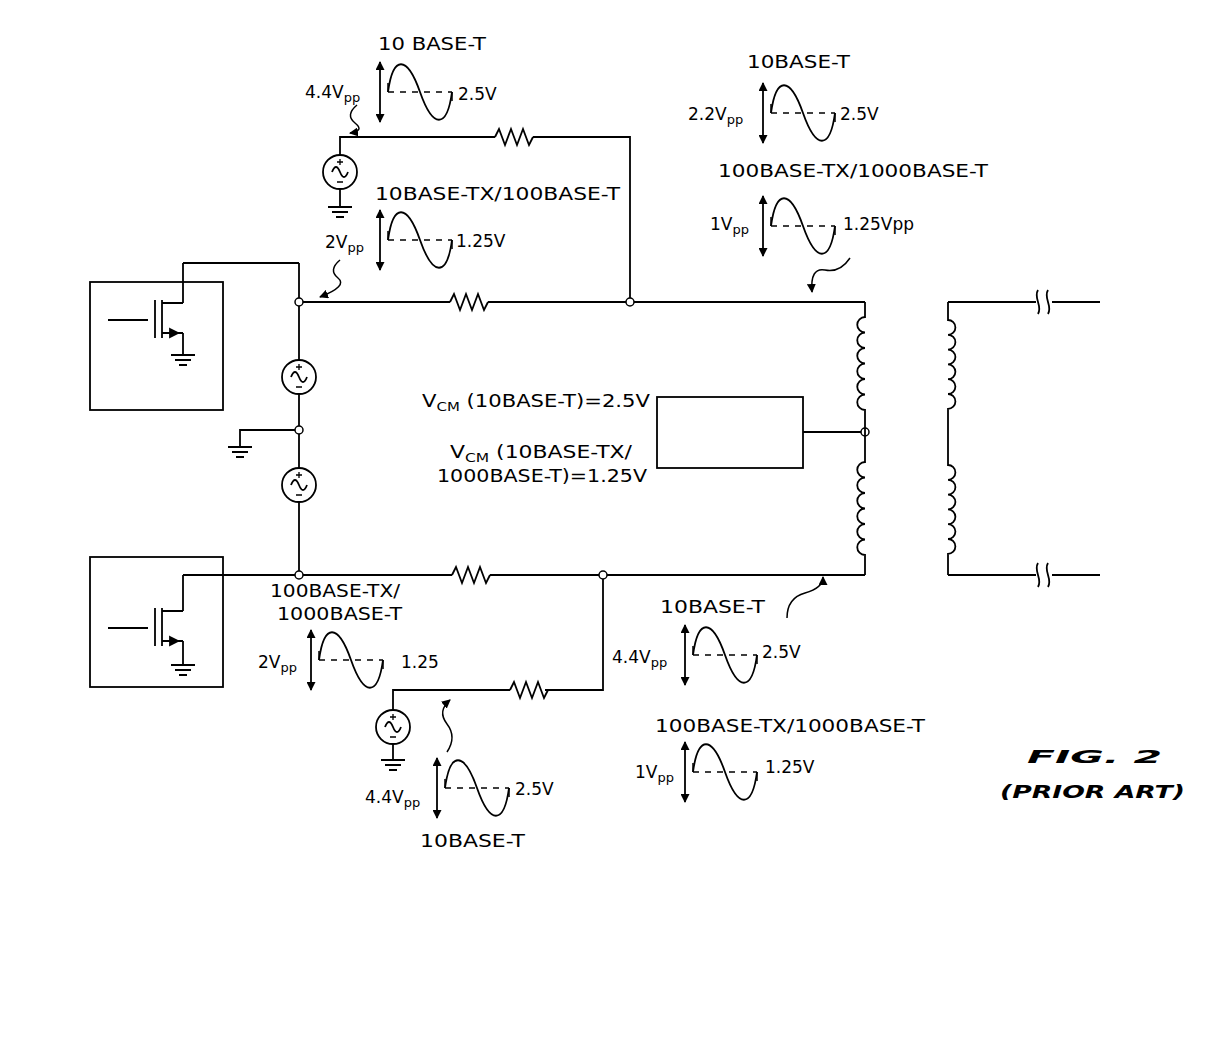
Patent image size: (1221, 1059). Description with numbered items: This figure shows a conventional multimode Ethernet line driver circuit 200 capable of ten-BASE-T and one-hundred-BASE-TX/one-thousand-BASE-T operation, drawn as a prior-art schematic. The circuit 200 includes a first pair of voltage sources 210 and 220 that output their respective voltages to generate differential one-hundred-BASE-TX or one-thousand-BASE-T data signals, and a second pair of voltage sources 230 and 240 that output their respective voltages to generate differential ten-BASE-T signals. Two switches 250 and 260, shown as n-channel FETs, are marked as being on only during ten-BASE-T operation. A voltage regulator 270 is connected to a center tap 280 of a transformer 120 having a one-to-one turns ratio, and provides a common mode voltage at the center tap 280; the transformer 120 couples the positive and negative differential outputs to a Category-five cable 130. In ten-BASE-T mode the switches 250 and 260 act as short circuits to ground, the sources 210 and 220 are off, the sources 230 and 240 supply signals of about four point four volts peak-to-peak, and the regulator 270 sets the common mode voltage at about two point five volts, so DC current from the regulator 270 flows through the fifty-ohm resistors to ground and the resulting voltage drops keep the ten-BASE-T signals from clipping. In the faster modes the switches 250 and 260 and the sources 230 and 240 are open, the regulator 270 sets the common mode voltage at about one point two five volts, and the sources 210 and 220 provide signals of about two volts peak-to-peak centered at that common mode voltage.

The multimode Ethernet line driver circuit 200 is at (165, 155).
The voltage source 210 is at (318, 378).
The voltage source 220 is at (318, 486).
The voltage source 230 is at (320, 172).
The voltage source 240 is at (369, 721).
The switch 250 is at (90, 343).
The switch 260 is at (90, 629).
The voltage regulator 270 is at (730, 397).
The center tap 280 is at (869, 432).
The transformer 120 is at (953, 676).
The Category-5 cable 130 is at (1020, 474).